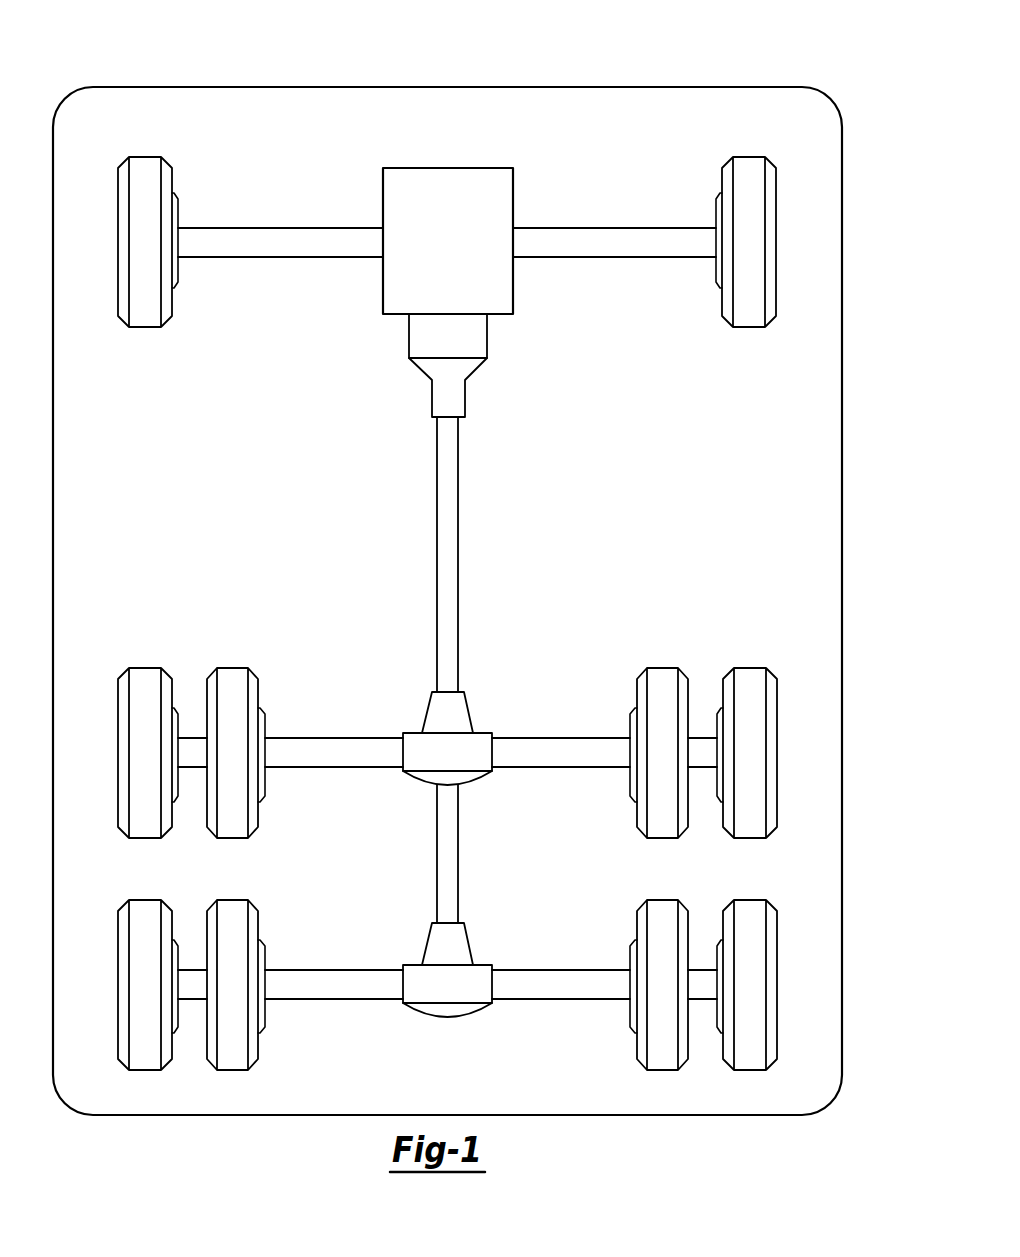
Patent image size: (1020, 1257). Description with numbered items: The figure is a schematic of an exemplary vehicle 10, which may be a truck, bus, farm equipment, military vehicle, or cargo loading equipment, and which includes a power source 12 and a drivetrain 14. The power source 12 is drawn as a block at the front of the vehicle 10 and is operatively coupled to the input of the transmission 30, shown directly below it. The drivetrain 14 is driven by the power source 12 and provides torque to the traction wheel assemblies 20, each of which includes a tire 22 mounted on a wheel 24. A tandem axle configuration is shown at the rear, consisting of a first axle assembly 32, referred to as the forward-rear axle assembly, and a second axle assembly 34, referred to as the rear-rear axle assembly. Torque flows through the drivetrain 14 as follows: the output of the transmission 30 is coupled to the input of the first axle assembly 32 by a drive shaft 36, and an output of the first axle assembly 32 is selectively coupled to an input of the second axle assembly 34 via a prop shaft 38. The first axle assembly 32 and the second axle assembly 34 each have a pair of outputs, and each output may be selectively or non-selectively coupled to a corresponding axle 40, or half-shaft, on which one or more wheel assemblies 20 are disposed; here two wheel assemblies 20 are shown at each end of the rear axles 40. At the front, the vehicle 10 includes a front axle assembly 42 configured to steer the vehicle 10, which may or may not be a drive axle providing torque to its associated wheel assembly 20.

The vehicle 10 is at (647, 84).
The power source 12 is at (456, 255).
The drivetrain 14 is at (447, 665).
The wheel assembly 20 is at (446, 614).
The tire 22 is at (145, 317).
The wheel 24 is at (175, 206).
The transmission 30 is at (456, 353).
The first axle assembly 32 is at (455, 767).
The second axle assembly 34 is at (455, 1000).
The drive shaft 36 is at (455, 605).
The prop shaft 38 is at (450, 866).
The axle 40 is at (376, 770).
The front axle assembly 42 is at (108, 233).